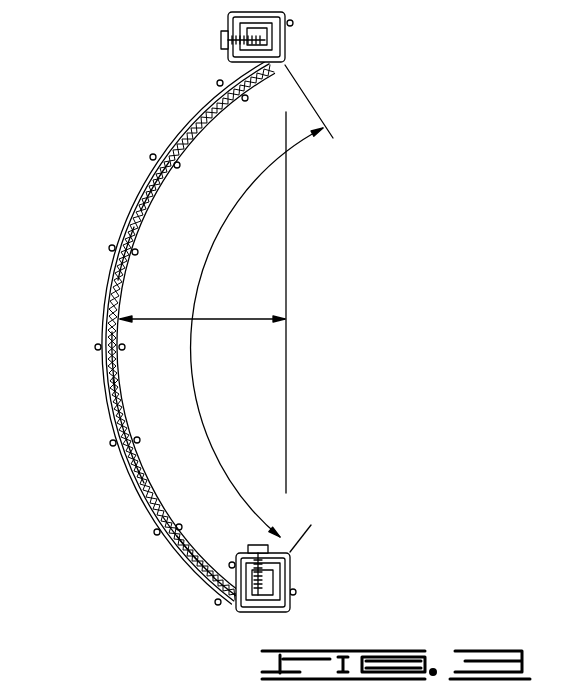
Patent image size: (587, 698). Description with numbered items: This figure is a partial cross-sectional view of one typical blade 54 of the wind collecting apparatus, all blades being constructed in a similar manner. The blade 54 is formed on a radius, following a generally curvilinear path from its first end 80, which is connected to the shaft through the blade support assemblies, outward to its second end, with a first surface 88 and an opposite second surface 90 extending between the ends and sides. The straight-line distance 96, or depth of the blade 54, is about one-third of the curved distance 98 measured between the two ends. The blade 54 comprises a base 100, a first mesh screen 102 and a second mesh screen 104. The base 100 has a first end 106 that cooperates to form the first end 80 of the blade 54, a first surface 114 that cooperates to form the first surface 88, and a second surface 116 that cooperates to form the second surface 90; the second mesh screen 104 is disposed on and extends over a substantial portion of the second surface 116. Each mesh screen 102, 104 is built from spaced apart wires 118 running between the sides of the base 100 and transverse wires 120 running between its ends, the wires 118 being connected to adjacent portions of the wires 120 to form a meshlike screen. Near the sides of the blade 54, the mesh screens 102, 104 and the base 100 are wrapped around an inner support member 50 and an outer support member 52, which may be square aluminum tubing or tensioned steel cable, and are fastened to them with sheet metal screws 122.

The inner support member 50 is at (283, 576).
The outer support member 52 is at (284, 38).
The blade 54 is at (219, 112).
The first end 80 is at (262, 612).
The first surface 88 is at (150, 212).
The second surface 90 is at (146, 181).
The straight-line distance 96 is at (204, 319).
The curved distance 98 is at (204, 422).
The base 100 is at (113, 360).
The first mesh screen 102 is at (134, 256).
The second mesh screen 104 is at (150, 150).
The first end 106 is at (252, 612).
The first surface 114 is at (199, 553).
The second surface 116 is at (128, 460).
The wire 118 is at (123, 405).
The wire 120 is at (126, 346).
The sheet metal screw 122 is at (222, 40).